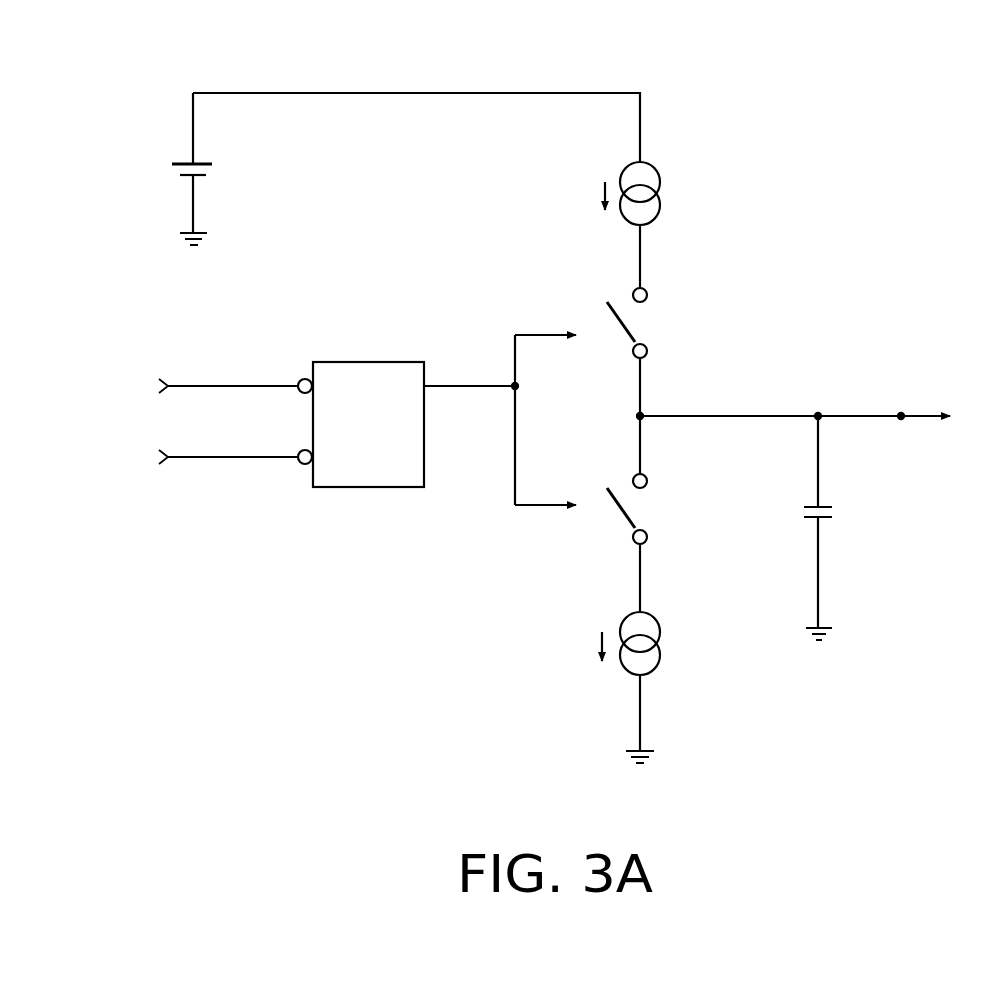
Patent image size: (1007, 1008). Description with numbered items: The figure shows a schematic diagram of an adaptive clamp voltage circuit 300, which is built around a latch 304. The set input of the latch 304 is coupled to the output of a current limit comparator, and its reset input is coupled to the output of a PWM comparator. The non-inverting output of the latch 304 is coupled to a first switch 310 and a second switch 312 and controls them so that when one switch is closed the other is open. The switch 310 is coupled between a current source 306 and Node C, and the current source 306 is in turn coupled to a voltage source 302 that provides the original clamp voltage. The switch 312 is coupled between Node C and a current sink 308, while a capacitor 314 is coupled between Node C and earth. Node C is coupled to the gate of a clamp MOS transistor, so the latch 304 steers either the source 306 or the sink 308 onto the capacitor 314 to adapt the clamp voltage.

The adaptive clamp voltage circuit 300 is at (913, 66).
The voltage source 302 is at (207, 165).
The latch 304 is at (380, 362).
The current source 306 is at (660, 165).
The current sink 308 is at (660, 645).
The switch 310 is at (625, 322).
The switch 312 is at (636, 507).
The capacitor 314 is at (828, 519).